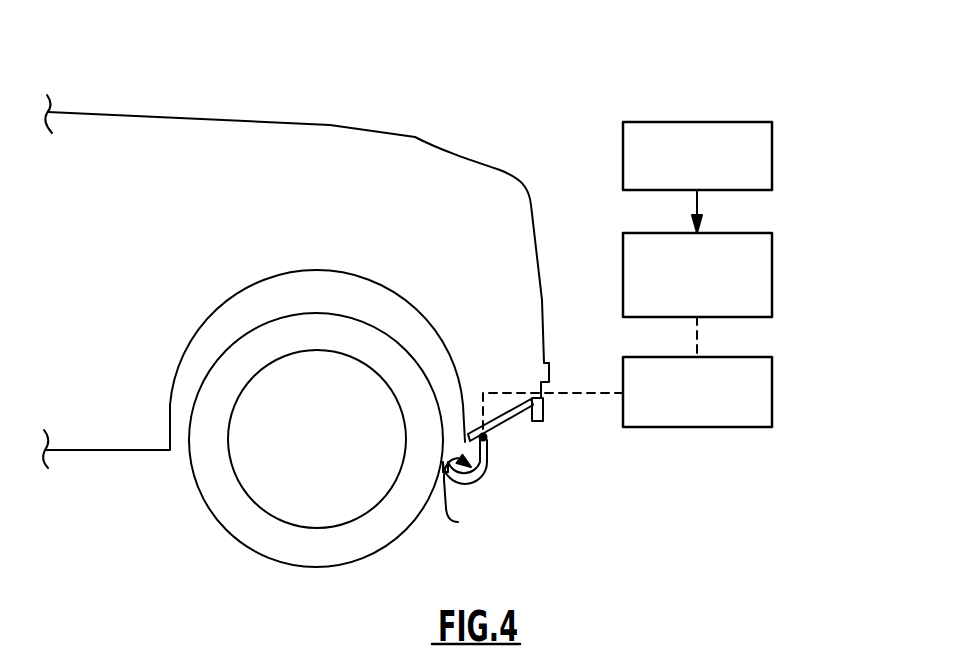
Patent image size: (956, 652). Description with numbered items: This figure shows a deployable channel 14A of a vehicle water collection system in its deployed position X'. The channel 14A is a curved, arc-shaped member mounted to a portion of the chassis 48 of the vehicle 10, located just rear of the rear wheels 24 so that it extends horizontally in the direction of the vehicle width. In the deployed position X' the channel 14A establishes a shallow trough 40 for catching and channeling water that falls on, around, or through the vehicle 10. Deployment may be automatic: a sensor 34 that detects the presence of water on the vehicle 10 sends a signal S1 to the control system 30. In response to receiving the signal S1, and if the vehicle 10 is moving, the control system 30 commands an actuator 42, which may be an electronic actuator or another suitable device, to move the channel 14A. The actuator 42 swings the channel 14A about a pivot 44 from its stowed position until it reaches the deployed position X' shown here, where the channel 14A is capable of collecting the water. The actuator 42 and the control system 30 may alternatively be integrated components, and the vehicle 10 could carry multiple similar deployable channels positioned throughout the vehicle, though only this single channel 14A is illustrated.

The vehicle 10 is at (472, 100).
The rear wheels 24 is at (367, 534).
The sensor 34 is at (727, 122).
The signal S1 is at (699, 205).
The control system 30 is at (772, 243).
The actuator 42 is at (772, 371).
The pivot 44 is at (481, 432).
The chassis 48 is at (516, 422).
The channel 14A is at (492, 480).
The shallow trough 40 is at (465, 495).
The deployed position X' is at (547, 478).